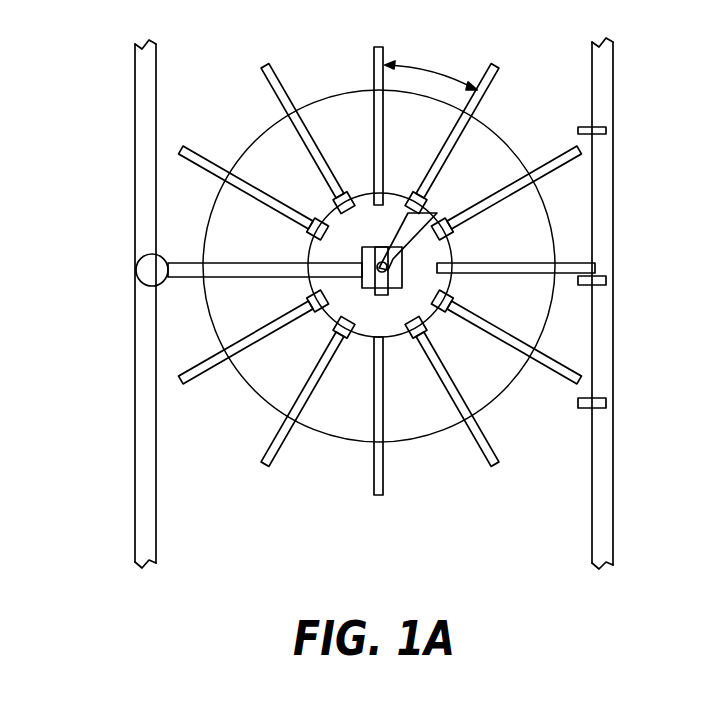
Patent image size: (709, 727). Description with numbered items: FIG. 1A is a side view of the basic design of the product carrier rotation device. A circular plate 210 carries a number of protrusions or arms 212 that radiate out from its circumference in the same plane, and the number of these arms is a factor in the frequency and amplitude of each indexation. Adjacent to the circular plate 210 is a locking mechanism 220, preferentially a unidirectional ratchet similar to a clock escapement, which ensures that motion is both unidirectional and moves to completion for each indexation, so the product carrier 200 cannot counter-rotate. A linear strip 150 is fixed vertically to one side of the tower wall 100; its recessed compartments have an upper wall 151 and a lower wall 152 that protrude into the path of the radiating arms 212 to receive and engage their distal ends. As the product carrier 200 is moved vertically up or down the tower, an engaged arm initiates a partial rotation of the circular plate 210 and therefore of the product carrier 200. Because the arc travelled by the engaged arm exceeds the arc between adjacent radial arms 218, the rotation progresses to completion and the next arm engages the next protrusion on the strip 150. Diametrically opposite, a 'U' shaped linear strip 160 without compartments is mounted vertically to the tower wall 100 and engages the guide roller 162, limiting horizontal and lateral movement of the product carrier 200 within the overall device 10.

The lifting system 10 is at (656, 366).
The tower wall 100 is at (137, 103).
The linear strip 150 is at (592, 62).
The upper wall 151 is at (587, 126).
The lower wall 152 is at (597, 135).
The 'U' shaped linear strip 160 is at (155, 523).
The guide roller 162 is at (172, 283).
The product carrier 200 is at (260, 125).
The circular plate 210 is at (365, 183).
The protrusions (arms) 212 is at (553, 164).
The arc between adjacent radial arms 218 is at (431, 66).
The locking mechanism 220 is at (433, 208).